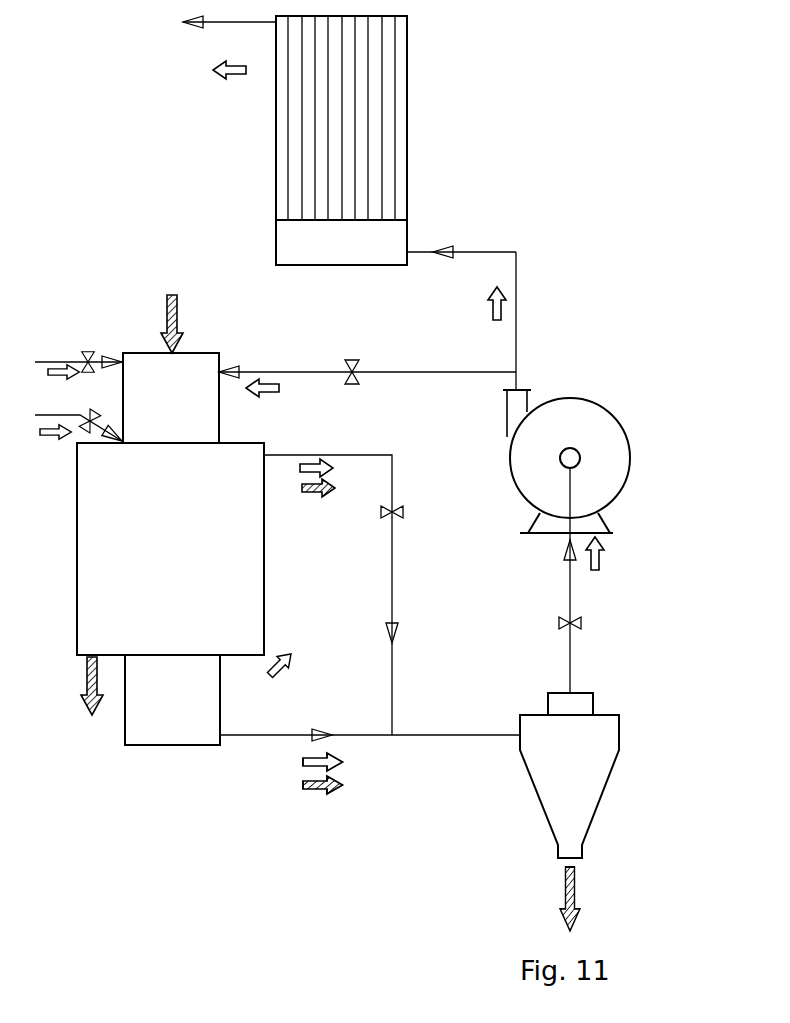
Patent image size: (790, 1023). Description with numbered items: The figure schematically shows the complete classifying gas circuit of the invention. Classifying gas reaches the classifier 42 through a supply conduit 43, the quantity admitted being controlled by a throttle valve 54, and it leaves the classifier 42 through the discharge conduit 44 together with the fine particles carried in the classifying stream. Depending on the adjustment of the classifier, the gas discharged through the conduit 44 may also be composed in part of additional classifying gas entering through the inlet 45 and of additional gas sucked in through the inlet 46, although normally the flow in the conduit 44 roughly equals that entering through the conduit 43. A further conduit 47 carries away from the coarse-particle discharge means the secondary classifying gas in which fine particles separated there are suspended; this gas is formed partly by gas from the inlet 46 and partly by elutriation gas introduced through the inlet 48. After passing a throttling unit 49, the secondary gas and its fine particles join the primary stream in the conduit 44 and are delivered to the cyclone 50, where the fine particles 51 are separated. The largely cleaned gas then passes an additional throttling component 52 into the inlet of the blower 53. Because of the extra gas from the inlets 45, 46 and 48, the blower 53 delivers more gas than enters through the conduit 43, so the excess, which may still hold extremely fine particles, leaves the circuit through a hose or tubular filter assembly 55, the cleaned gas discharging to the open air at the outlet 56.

The classifier 42 is at (170, 520).
The supply conduit 43 is at (367, 367).
The discharge conduit 44 is at (370, 761).
The inlet 45 is at (79, 354).
The inlet 46 is at (80, 416).
The conduit 47 is at (331, 579).
The inlet 48 is at (242, 657).
The throttling unit 49 is at (412, 511).
The cyclone 50 is at (578, 766).
The fine particles 51 is at (620, 896).
The throttling component 52 is at (615, 580).
The blower 53 is at (600, 458).
The throttle valve 54 is at (354, 354).
The hose or tubular filter assembly 55 is at (312, 247).
The outlet 56 is at (229, 47).